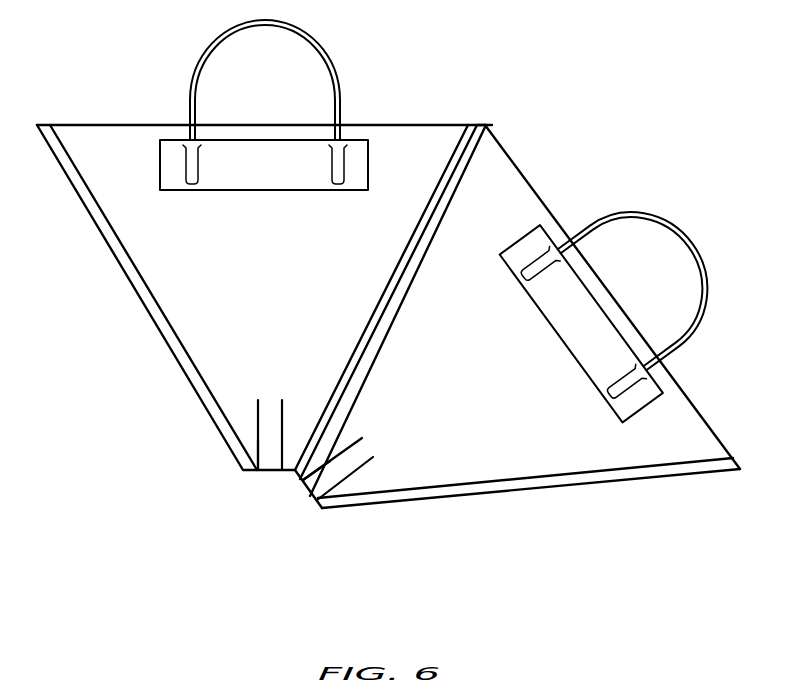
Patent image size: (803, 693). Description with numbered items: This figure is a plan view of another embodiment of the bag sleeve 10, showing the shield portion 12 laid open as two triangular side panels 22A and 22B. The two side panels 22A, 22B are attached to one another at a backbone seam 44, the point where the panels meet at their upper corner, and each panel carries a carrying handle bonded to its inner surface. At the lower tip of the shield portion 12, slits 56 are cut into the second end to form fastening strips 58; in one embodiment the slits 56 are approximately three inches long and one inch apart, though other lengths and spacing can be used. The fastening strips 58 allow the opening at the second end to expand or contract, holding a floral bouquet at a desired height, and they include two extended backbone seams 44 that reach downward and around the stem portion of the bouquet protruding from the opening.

The bag sleeve 10 is at (140, 384).
The shield portion 12 is at (102, 123).
The side panel 22A is at (163, 275).
The side panel 22B is at (508, 457).
The backbone seam 44 is at (492, 118).
The slits 56 is at (258, 423).
The fastening strips 58 is at (268, 455).